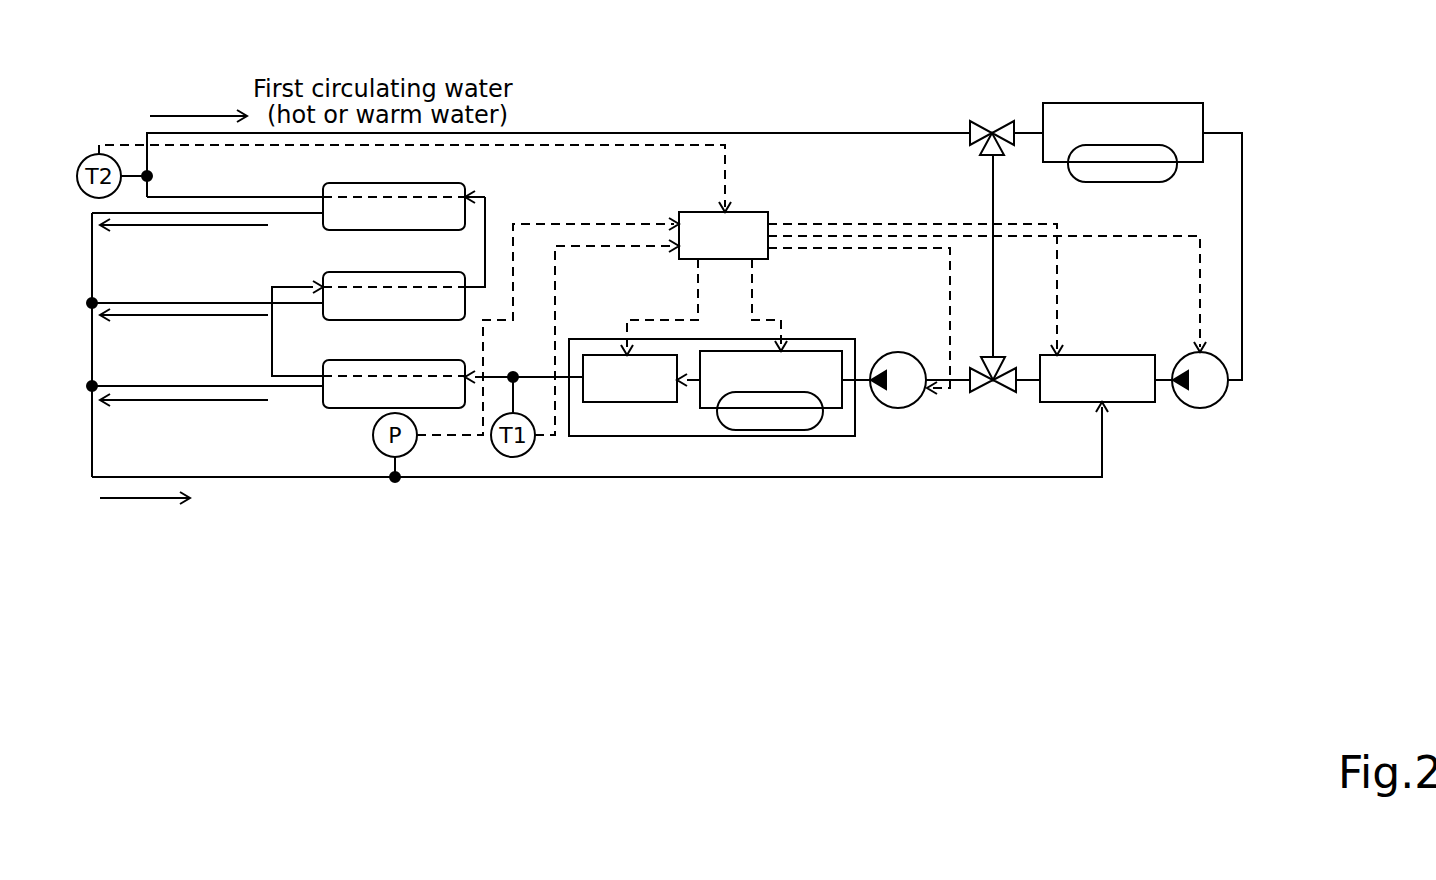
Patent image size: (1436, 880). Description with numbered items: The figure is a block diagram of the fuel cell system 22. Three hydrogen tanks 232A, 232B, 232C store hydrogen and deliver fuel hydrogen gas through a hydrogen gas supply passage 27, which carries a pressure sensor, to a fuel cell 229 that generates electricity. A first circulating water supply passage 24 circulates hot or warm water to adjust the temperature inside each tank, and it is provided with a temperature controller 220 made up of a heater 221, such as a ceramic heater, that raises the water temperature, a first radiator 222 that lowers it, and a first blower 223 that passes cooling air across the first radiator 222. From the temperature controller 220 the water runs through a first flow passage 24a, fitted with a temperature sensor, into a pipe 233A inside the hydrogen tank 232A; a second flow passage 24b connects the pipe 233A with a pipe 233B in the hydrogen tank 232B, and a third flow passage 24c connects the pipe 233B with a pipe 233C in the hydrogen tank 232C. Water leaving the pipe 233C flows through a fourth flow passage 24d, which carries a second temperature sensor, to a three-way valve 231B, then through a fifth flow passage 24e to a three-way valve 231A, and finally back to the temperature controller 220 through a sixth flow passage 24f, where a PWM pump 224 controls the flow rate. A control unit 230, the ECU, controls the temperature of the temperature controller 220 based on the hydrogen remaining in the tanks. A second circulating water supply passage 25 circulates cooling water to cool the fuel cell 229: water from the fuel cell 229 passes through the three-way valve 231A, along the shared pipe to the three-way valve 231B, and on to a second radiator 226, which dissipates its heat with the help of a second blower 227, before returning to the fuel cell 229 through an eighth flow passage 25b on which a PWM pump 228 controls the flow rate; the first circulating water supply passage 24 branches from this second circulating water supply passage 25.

The fuel cell system 22 is at (692, 560).
The first circulating water supply passage 24 is at (765, 128).
The first flow passage 24a is at (535, 364).
The second flow passage 24b is at (272, 330).
The third flow passage 24c is at (485, 226).
The fourth flow passage 24d is at (615, 132).
The fifth flow passage 24e is at (993, 177).
The sixth flow passage 24f is at (942, 378).
The second circulating water supply passage 25 is at (1238, 218).
The eighth flow passage 25b is at (1242, 182).
The hydrogen gas supply passage 27 is at (530, 477).
The temperature controller 220 is at (820, 339).
The heater 221 is at (637, 402).
The first radiator 222 is at (835, 408).
The first blower (FAN) 223 is at (717, 421).
The PWM pump 224 is at (896, 408).
The second radiator 226 is at (1113, 103).
The second blower (FAN) 227 is at (1125, 182).
The PWM pump 228 is at (1199, 408).
The fuel cell 229 is at (1094, 355).
The control unit (ECU) 230 is at (745, 212).
The three-way valve 231A is at (1000, 362).
The three-way valve 231B is at (990, 122).
The hydrogen tank 232A is at (335, 408).
The hydrogen tank 232B is at (333, 272).
The hydrogen tank 232C is at (333, 183).
The pipe 233A is at (407, 376).
The pipe 233B is at (418, 287).
The pipe 233C is at (418, 197).